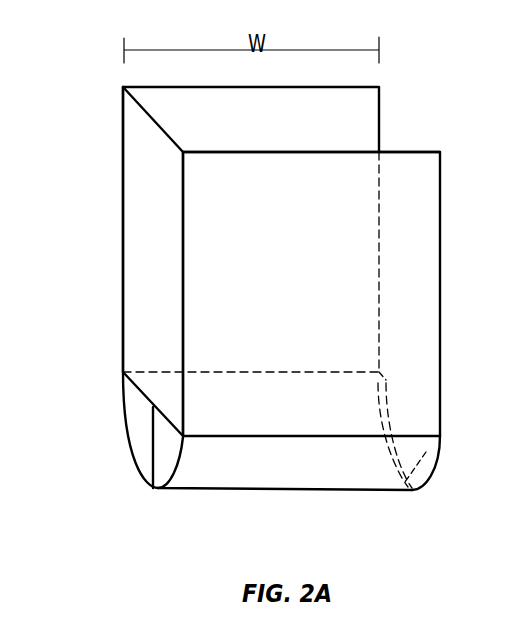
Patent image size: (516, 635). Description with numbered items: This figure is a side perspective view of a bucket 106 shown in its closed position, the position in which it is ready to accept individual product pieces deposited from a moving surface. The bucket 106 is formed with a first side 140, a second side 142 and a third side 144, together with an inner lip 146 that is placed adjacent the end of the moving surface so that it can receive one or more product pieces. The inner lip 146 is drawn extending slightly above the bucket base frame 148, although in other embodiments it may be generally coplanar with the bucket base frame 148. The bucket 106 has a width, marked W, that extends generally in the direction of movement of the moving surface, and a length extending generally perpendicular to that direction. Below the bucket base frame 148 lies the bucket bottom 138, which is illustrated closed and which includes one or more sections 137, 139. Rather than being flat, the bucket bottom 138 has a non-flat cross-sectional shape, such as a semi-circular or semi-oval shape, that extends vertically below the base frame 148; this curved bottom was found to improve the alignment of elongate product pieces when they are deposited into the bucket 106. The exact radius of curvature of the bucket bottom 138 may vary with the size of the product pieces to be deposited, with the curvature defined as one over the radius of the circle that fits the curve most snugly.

The bucket 106 is at (82, 76).
The section of bucket bottom 137 is at (143, 440).
The bucket bottom 138 is at (143, 412).
The section of bucket bottom 139 is at (160, 467).
The first side 140 is at (180, 127).
The second side 142 is at (406, 267).
The third side 144 is at (147, 248).
The inner lip 146 is at (390, 422).
The bucket base frame 148 is at (162, 372).